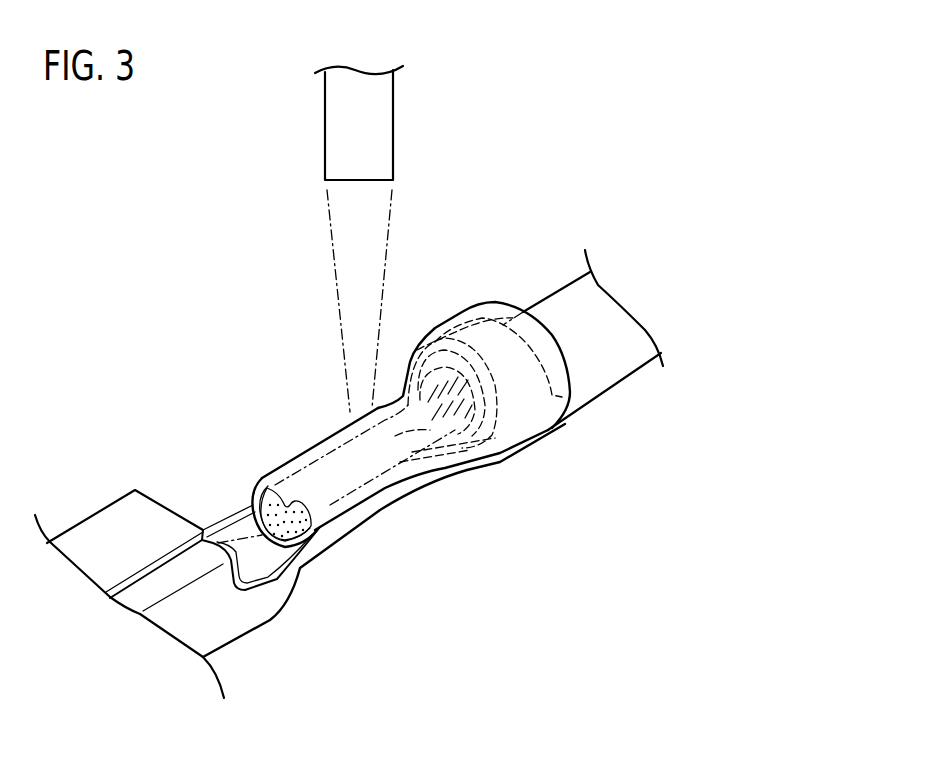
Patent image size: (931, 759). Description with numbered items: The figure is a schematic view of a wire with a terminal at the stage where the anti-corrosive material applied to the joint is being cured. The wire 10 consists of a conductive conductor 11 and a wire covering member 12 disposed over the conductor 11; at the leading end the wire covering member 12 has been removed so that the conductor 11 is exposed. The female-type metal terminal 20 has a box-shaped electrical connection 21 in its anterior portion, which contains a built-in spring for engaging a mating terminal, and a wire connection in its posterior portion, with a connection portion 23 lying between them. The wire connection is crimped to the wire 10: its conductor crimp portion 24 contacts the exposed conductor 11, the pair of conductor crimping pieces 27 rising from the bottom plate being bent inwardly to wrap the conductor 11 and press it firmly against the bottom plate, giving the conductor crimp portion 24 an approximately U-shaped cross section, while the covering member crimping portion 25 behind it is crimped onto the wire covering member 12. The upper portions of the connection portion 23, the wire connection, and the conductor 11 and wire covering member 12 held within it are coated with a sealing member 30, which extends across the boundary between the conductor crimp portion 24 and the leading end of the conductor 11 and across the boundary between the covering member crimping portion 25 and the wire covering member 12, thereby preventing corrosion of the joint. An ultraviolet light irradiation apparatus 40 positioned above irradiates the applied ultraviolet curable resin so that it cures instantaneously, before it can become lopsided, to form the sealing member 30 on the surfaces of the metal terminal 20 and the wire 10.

The wire 10 is at (532, 292).
The conductor 11 is at (460, 470).
The wire covering member 12 is at (598, 352).
The metal terminal 20 is at (85, 498).
The electrical connection 21 is at (127, 560).
The connection portion 23 is at (297, 570).
The conductor crimp portion 24 is at (333, 439).
The covering member crimping portion 25 is at (478, 332).
The conductor crimping pieces 27 is at (365, 478).
The sealing member 30 is at (520, 400).
The ultraviolet light irradiation apparatus 40 is at (368, 123).